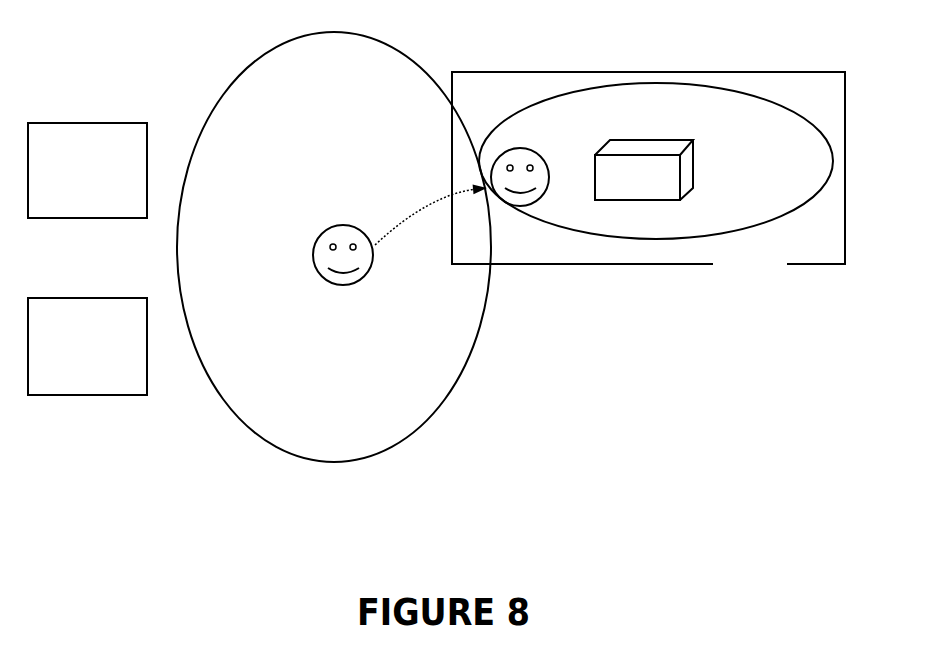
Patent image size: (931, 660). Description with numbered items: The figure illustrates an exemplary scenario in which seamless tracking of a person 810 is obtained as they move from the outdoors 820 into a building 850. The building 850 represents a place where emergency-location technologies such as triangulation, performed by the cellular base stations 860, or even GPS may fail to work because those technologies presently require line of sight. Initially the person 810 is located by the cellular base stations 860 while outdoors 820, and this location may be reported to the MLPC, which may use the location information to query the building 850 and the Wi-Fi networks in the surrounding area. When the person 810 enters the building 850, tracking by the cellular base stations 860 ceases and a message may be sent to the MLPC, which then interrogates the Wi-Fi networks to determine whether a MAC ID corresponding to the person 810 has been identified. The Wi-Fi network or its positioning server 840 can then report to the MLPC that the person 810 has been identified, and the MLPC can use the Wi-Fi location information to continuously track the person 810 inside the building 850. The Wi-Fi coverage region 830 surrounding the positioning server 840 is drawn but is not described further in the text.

The person 810 is at (373, 283).
The outdoors 820 is at (353, 400).
The Wi-Fi network coverage area 830 is at (658, 240).
The positioning server 840 is at (693, 160).
The building 850 is at (613, 267).
The cellular base stations 860 is at (50, 222).